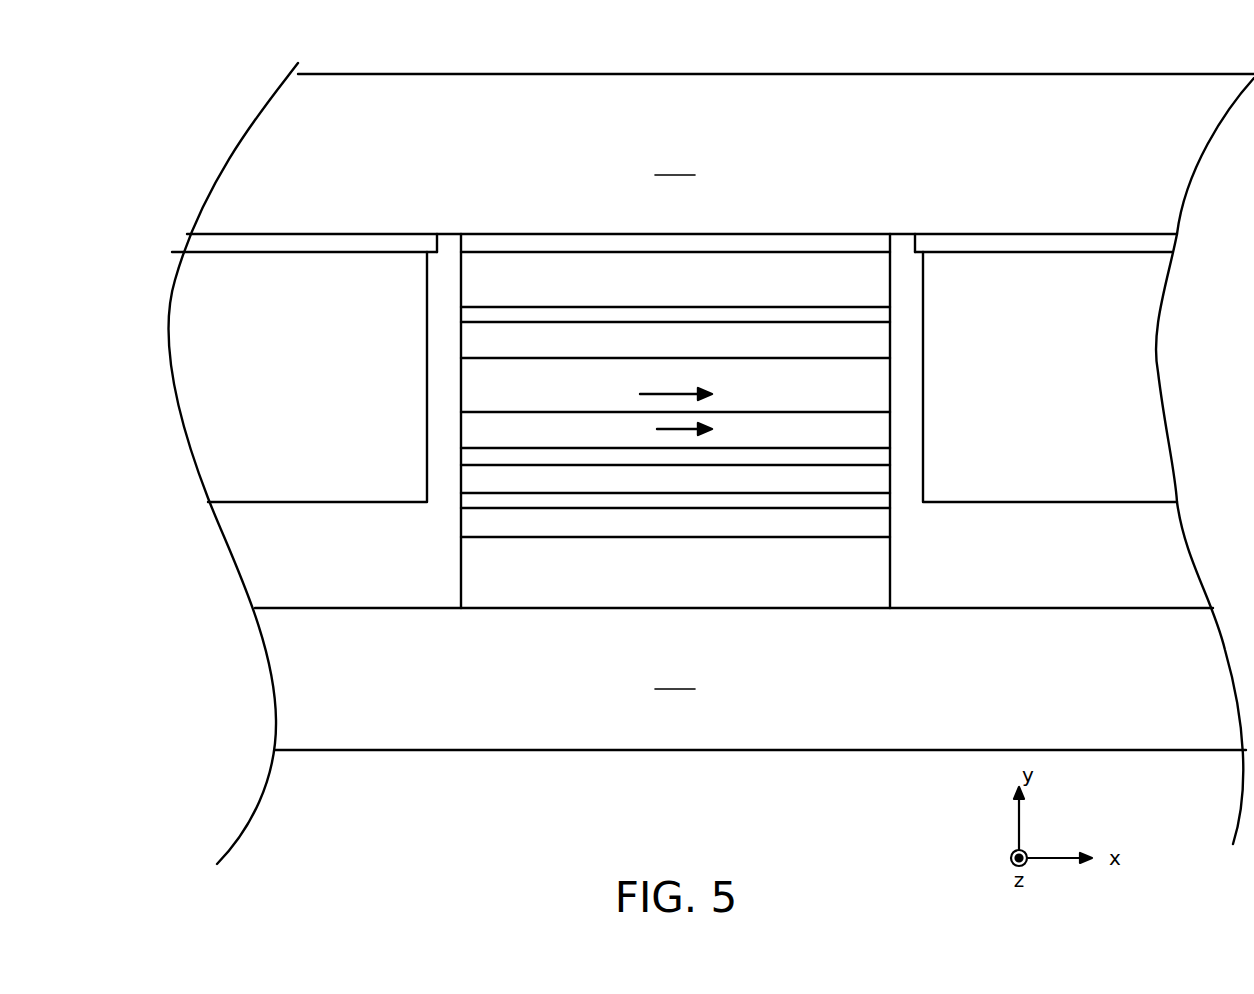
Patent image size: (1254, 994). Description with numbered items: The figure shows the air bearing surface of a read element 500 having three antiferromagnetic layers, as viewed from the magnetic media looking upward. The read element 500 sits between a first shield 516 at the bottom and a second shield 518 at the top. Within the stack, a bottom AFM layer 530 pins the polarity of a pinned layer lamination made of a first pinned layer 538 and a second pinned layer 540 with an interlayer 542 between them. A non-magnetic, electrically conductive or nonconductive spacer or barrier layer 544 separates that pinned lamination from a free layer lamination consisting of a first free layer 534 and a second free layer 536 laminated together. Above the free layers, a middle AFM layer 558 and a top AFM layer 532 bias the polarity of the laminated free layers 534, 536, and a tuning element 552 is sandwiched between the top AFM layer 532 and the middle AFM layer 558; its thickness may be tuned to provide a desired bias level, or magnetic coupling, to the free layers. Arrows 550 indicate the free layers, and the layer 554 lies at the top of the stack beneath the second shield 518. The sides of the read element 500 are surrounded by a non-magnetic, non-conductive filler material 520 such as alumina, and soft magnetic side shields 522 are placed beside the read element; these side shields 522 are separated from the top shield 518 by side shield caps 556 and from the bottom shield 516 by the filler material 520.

The read element 500 is at (432, 332).
The first shield 516 is at (675, 678).
The second shield 518 is at (675, 164).
The filler material 520 is at (302, 564).
The soft magnetic side shields 522 is at (265, 404).
The bottom AFM layer 530 is at (655, 582).
The top AFM layer 532 is at (655, 298).
The first free layer 534 is at (745, 440).
The second free layer 536 is at (745, 405).
The first pinned layer 538 is at (891, 518).
The second pinned layer 540 is at (891, 473).
The interlayer 542 is at (463, 498).
The spacer or barrier layer 544 is at (463, 455).
The magnetization direction arrows 550 is at (657, 429).
The tuning element 552 is at (768, 315).
The top layer 554 is at (683, 245).
The side shield caps 556 is at (320, 242).
The middle AFM layer 558 is at (662, 353).